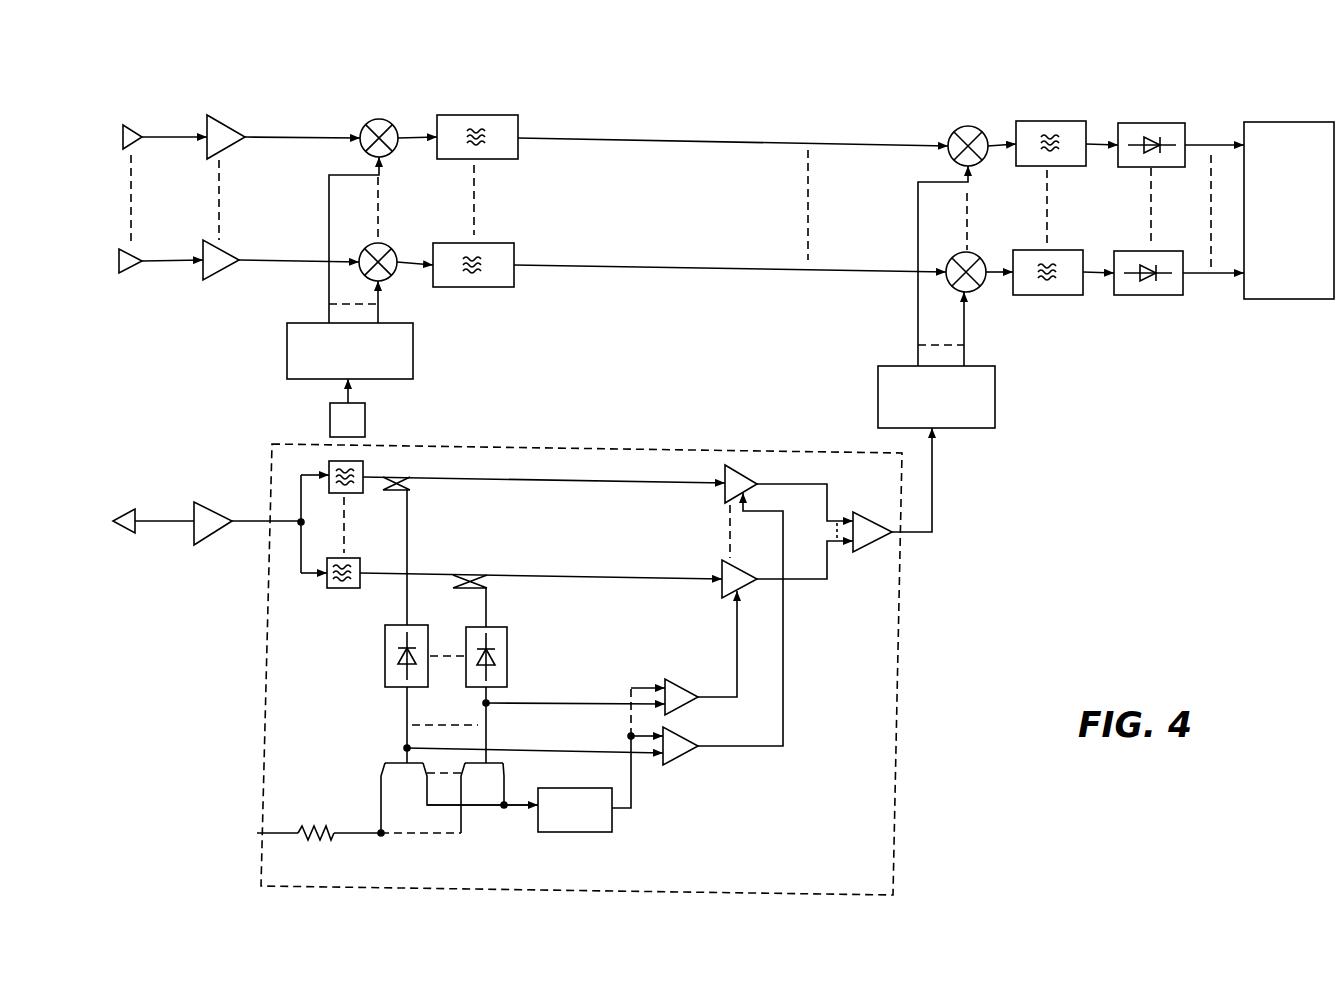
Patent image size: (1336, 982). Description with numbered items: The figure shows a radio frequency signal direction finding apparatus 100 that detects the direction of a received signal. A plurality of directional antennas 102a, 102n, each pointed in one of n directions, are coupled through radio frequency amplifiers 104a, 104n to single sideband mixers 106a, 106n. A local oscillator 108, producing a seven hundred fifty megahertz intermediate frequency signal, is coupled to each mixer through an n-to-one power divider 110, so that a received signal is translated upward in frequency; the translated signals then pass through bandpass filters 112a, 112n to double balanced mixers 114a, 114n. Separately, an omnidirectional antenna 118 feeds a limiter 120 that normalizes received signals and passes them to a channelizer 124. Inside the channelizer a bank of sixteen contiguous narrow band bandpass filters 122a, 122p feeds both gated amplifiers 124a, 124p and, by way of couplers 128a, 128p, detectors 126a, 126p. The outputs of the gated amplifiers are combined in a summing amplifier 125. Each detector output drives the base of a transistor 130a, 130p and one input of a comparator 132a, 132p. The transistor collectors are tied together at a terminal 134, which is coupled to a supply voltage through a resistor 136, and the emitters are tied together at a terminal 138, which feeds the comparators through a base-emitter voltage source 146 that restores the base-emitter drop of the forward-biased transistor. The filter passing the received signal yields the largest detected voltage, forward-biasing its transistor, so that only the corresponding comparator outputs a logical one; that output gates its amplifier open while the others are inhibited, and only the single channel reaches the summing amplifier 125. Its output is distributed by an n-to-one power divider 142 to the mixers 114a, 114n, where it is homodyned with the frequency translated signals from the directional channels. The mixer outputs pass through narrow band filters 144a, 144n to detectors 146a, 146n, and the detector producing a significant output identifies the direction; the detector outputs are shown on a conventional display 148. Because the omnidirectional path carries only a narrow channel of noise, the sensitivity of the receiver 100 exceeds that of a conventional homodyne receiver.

The radio frequency signal direction finding apparatus 100 is at (757, 112).
The directional antenna 102a is at (138, 123).
The directional antenna 102n is at (135, 257).
The radio frequency amplifier 104a is at (251, 124).
The radio frequency amplifier 104n is at (233, 255).
The single sideband mixer 106a is at (395, 107).
The single sideband mixer 106n is at (393, 250).
The local oscillator 108 is at (366, 420).
The n:1 power divider 110 is at (417, 362).
The bandpass filter 112a is at (518, 127).
The bandpass filter 112n is at (515, 253).
The double balanced mixer 114a is at (980, 125).
The double balanced mixer 114n is at (975, 255).
The omnidirectional antenna 118 is at (127, 507).
The limiter 120 is at (217, 512).
The bandpass filter 122a is at (363, 466).
The bandpass filter 122p is at (382, 547).
The channelizer 124 is at (641, 447).
The gated amplifier 124a is at (757, 470).
The gated amplifier 124p is at (725, 562).
The summing amplifier 125 is at (867, 542).
The detector 126a is at (385, 660).
The detector 126p is at (507, 643).
The coupler 128a is at (410, 483).
The coupler 128p is at (488, 581).
The transistor 130a is at (459, 798).
The transistor 130p is at (483, 798).
The comparator 132a is at (693, 735).
The comparator 132p is at (690, 667).
The terminal 134 is at (382, 837).
The resistor 136 is at (315, 840).
The terminal 138 is at (503, 808).
The n:1 power divider 142 is at (997, 408).
The narrow band filter 144a is at (1072, 107).
The narrow band filter 144n is at (1072, 248).
The +VEB voltage source 146 is at (560, 833).
The detector 146a is at (1152, 123).
The detector 146n is at (1177, 252).
The display 148 is at (1300, 122).